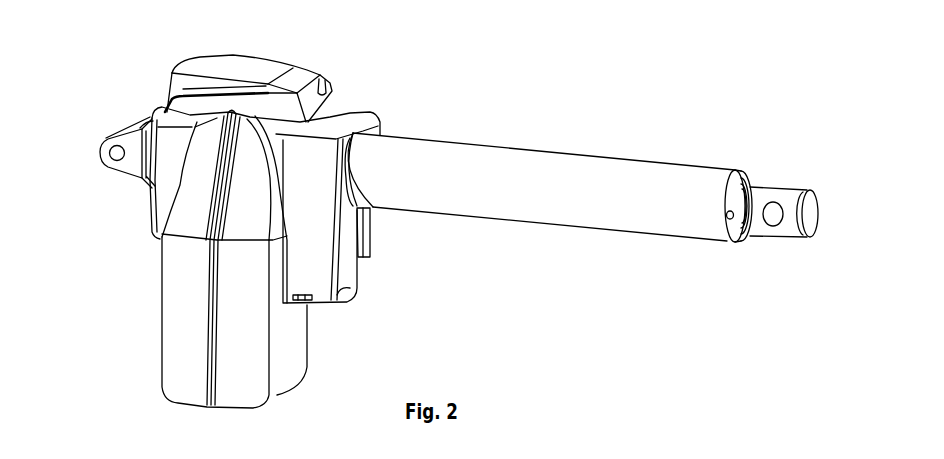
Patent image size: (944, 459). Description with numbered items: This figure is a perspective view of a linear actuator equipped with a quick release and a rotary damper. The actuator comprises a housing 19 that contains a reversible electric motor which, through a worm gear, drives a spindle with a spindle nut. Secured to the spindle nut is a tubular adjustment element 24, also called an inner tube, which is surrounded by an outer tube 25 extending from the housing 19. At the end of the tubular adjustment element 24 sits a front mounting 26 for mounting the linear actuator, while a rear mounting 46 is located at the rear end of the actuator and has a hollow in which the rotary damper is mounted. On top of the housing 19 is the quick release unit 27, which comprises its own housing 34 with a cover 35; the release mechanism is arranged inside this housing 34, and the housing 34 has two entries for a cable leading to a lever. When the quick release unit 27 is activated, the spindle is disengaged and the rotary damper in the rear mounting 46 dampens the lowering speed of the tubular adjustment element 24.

The housing 19 is at (143, 312).
The tubular adjustment element 24 is at (748, 182).
The outer tube 25 is at (503, 158).
The front mounting 26 is at (794, 212).
The quick release unit 27 is at (172, 52).
The housing 34 is at (330, 107).
The cover 35 is at (242, 70).
The rear mounting 46 is at (102, 143).